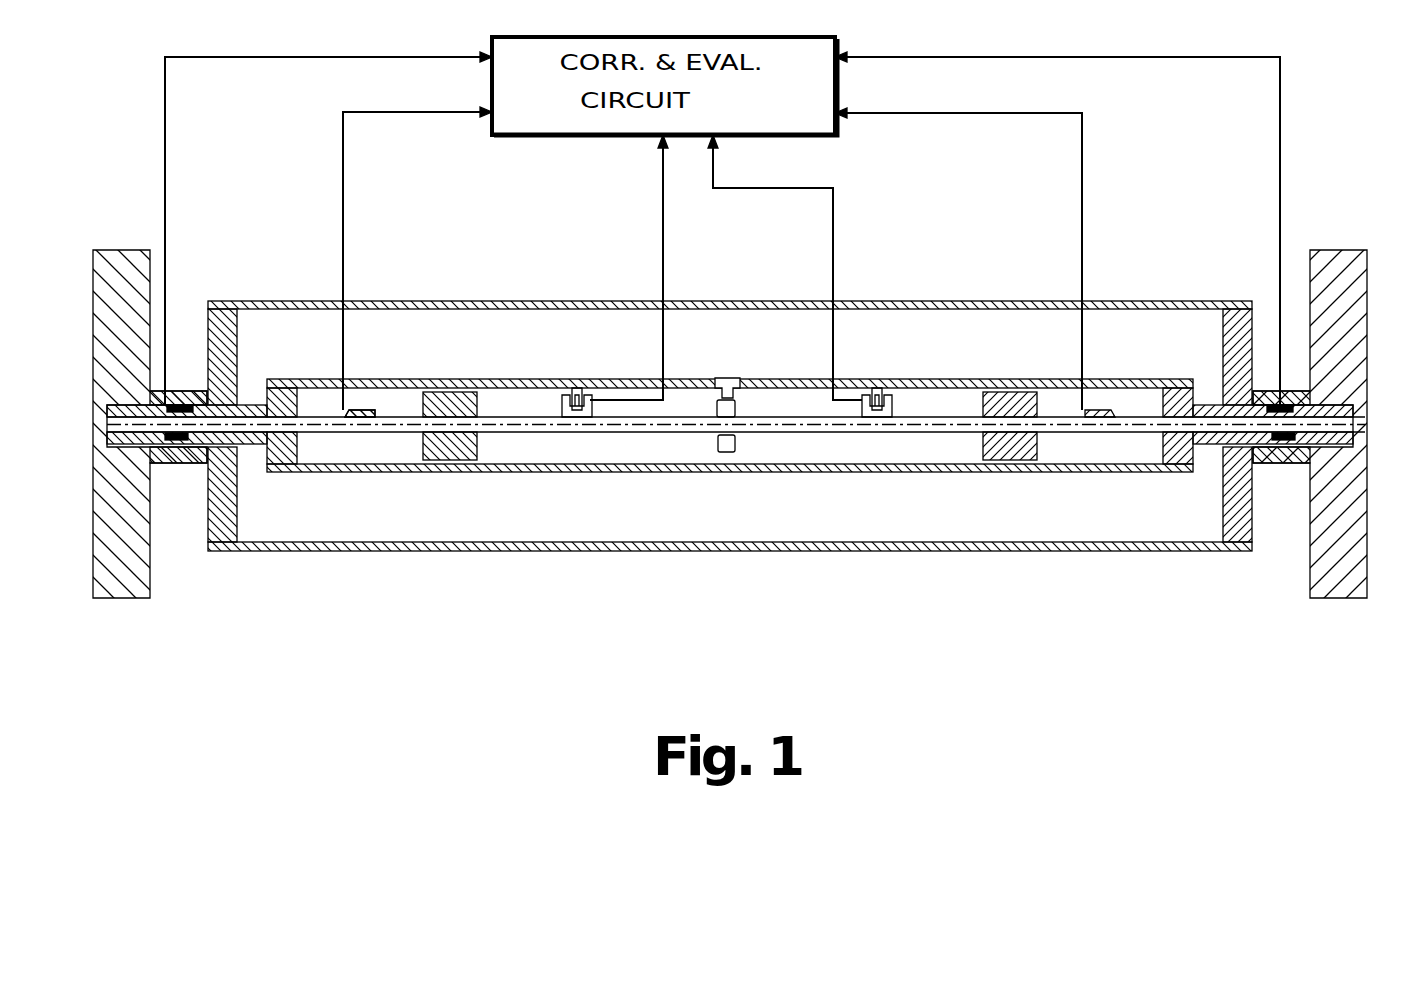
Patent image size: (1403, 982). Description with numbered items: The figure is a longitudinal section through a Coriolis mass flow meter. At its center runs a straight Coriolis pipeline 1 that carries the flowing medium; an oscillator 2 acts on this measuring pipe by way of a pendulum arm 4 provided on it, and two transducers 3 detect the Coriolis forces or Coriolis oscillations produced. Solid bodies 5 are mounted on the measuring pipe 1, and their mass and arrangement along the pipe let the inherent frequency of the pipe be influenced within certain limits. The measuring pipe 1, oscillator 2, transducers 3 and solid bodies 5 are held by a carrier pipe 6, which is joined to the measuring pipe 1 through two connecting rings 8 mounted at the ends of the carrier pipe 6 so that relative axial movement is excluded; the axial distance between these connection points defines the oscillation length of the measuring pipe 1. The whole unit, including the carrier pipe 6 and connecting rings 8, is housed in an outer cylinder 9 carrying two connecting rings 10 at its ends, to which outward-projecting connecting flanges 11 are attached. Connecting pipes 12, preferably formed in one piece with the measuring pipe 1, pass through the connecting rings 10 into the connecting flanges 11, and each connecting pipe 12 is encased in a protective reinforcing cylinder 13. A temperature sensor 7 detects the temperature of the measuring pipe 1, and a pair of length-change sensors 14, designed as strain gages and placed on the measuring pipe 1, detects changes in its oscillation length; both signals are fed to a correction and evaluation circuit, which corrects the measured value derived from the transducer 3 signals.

The Coriolis pipeline 1 is at (653, 422).
The oscillator 2 is at (742, 382).
The transducers 3 is at (580, 390).
The pendulum arm 4 is at (716, 393).
The solid bodies 5 is at (470, 392).
The carrier pipe 6 is at (400, 470).
The temperature sensor 7 is at (188, 391).
The connecting rings 8 is at (295, 472).
The outer cylinder 9 is at (347, 410).
The connecting rings 10 is at (240, 355).
The connecting flanges 11 is at (135, 585).
The connecting pipes 12 is at (198, 440).
The reinforcing cylinder 13 is at (175, 405).
The length-change sensor 14 is at (365, 410).